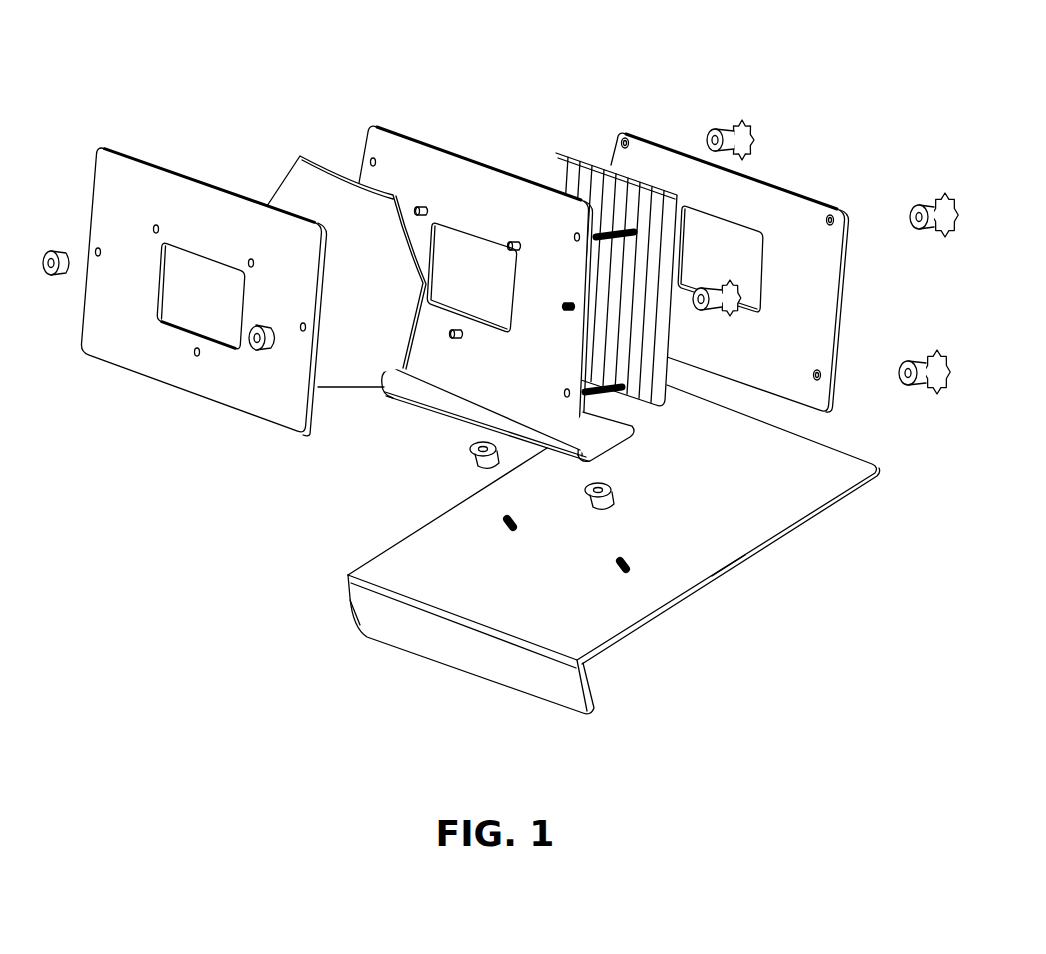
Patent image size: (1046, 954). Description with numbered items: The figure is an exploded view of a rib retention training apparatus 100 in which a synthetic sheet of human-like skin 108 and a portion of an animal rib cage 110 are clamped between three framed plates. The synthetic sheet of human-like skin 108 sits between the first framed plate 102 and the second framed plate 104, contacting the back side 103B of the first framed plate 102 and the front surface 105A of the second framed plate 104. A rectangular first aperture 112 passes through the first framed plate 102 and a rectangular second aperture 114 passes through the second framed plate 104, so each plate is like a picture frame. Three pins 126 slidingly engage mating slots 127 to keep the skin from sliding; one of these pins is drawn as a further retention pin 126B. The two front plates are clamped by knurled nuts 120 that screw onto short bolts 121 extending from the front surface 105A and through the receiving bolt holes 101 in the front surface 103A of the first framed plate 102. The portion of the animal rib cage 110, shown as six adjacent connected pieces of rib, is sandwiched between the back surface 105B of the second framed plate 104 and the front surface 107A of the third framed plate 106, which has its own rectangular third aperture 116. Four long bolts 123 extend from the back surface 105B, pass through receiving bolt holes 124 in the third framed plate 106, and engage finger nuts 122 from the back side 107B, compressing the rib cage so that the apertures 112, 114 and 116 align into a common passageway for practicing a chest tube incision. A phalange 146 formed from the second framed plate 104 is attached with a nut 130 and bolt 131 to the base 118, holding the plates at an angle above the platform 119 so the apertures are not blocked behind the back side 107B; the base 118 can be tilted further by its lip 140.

The rib retention training apparatus 100 is at (478, 37).
The receiving bolt holes 101 is at (95, 252).
The first framed plate 102 is at (178, 392).
The front surface of the first framed plate 103A is at (112, 168).
The back side of the first framed plate 103B is at (165, 163).
The second framed plate 104 is at (358, 167).
The front surface of the second framed plate 105A is at (386, 148).
The back surface of the second framed plate 105B is at (440, 145).
The third framed plate 106 is at (842, 293).
The front surface of the third framed plate 107A is at (613, 162).
The back side of the third framed plate 107B is at (679, 149).
The synthetic sheet of human-like skin 108 is at (273, 187).
The portion of an animal rib cage 110 is at (553, 168).
The first aperture 112 is at (216, 306).
The second aperture 114 is at (490, 293).
The third aperture 116 is at (736, 261).
The base 118 is at (384, 543).
The platform 119 is at (727, 570).
The knurled nut 120 is at (53, 277).
The short bolt 121 is at (567, 312).
The finger nut 122 is at (757, 137).
The long bolt 123 is at (605, 397).
The receiving bolt holes 124 is at (813, 375).
The pin 126 is at (417, 207).
The stud 126B is at (514, 242).
The slot 127 is at (152, 228).
The nut 130 is at (470, 462).
The bolt 131 is at (503, 523).
The lip 140 is at (350, 612).
The phalange 146 is at (610, 455).